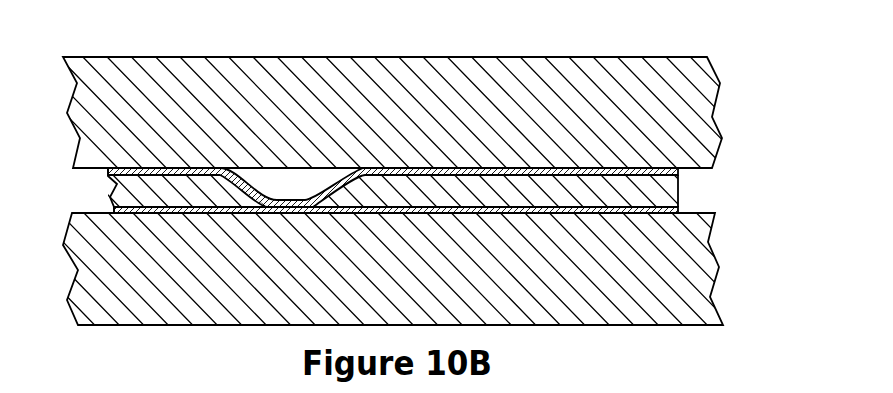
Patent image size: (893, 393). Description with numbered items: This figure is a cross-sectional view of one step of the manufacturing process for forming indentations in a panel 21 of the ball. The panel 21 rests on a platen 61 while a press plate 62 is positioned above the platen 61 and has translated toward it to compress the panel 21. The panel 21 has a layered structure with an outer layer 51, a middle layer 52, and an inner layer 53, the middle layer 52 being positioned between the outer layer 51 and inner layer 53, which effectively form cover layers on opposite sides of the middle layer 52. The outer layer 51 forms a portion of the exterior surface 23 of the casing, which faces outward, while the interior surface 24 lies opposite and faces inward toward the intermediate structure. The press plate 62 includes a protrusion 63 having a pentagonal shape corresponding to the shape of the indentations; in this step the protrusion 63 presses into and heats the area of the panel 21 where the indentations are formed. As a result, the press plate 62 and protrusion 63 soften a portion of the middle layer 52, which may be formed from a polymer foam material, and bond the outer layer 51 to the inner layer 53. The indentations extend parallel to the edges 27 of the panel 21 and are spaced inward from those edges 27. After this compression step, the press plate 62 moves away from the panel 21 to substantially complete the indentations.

The panel 21 is at (183, 162).
The exterior surface 23 is at (618, 167).
The interior surface 24 is at (604, 213).
The edges 27 is at (678, 188).
The outer layer 51 is at (480, 168).
The middle layer 52 is at (110, 193).
The inner layer 53 is at (556, 213).
The platen 61 is at (718, 255).
The press plate 62 is at (718, 118).
The protrusion 63 is at (290, 188).